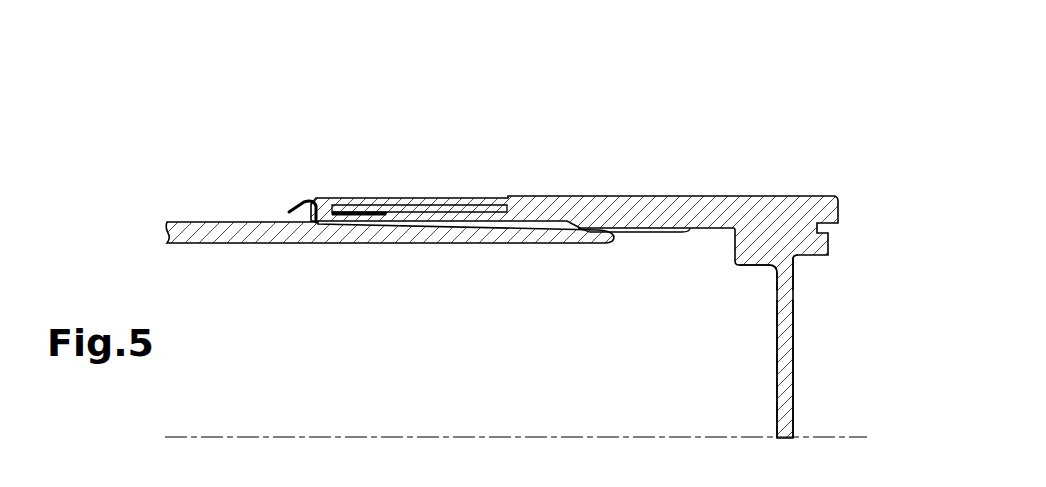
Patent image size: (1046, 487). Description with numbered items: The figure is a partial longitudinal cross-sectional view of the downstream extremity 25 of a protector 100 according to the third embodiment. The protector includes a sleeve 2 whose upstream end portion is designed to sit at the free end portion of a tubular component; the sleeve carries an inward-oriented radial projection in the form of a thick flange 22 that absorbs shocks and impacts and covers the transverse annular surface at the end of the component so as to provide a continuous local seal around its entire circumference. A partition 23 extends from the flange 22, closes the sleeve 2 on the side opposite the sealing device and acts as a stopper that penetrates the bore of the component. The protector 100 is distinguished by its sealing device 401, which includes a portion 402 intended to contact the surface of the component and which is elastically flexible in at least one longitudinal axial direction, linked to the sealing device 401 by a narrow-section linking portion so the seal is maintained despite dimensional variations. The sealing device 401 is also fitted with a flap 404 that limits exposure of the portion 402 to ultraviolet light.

The protector 100 is at (731, 146).
The sleeve 2 is at (629, 192).
The flange 22 is at (738, 250).
The partition 23 is at (783, 355).
The downstream extremity 25 is at (405, 205).
The sealing device 401 is at (347, 193).
The portion 402 is at (318, 223).
The flap 404 is at (300, 202).